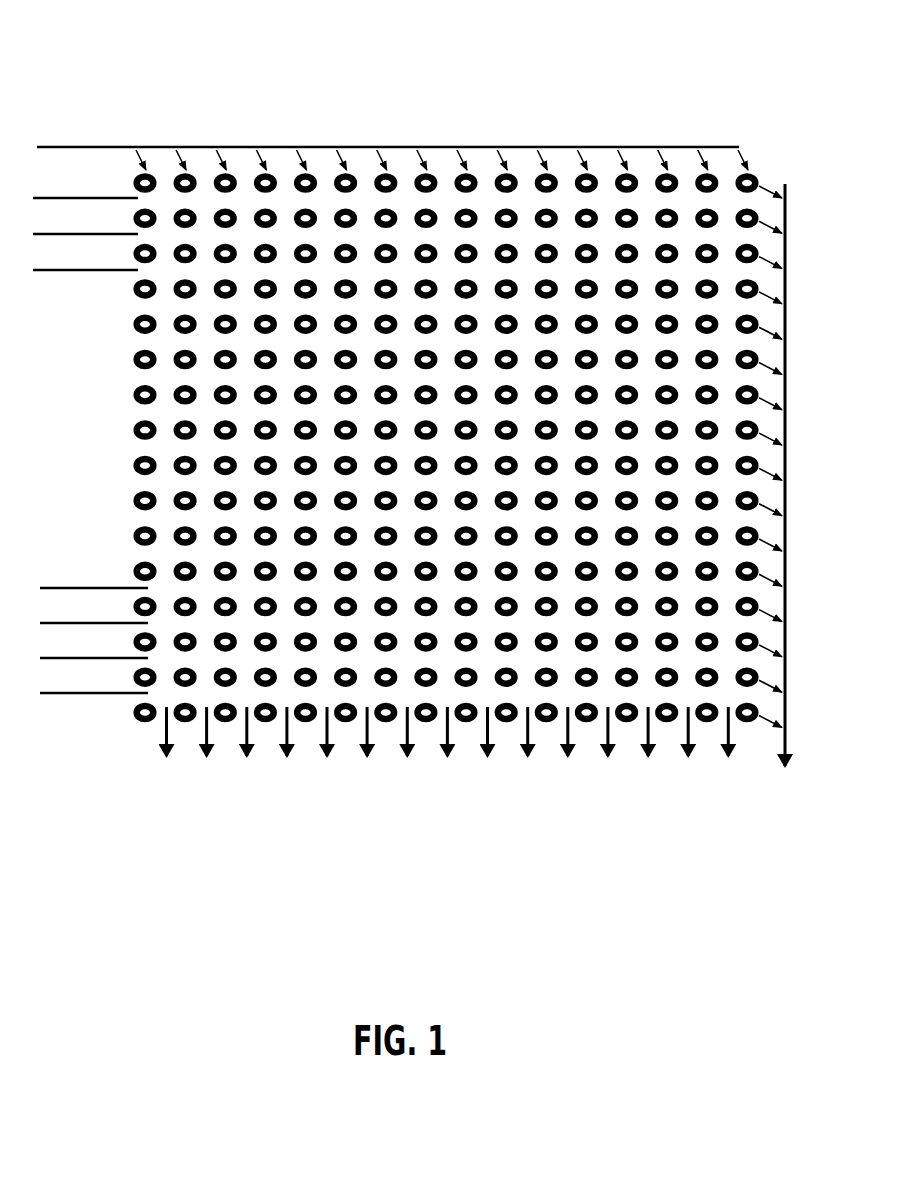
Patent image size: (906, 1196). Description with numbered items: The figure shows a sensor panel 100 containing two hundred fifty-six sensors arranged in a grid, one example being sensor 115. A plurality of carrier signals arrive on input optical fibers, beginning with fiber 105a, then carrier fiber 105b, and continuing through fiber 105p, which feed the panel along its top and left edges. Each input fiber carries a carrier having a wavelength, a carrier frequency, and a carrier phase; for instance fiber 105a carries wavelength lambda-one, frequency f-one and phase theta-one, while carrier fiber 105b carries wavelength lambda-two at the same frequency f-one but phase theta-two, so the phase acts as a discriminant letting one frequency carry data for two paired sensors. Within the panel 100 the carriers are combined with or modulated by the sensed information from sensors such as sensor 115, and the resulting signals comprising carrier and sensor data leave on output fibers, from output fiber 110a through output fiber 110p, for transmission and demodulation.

The sensor panel 100 is at (409, 402).
The input optical fiber 105a is at (55, 135).
The carrier fiber 105b is at (48, 190).
The input optical fiber 105p is at (50, 688).
The output fiber 110a is at (158, 733).
The output optical fiber 110p is at (778, 745).
The sensor 115 is at (132, 395).